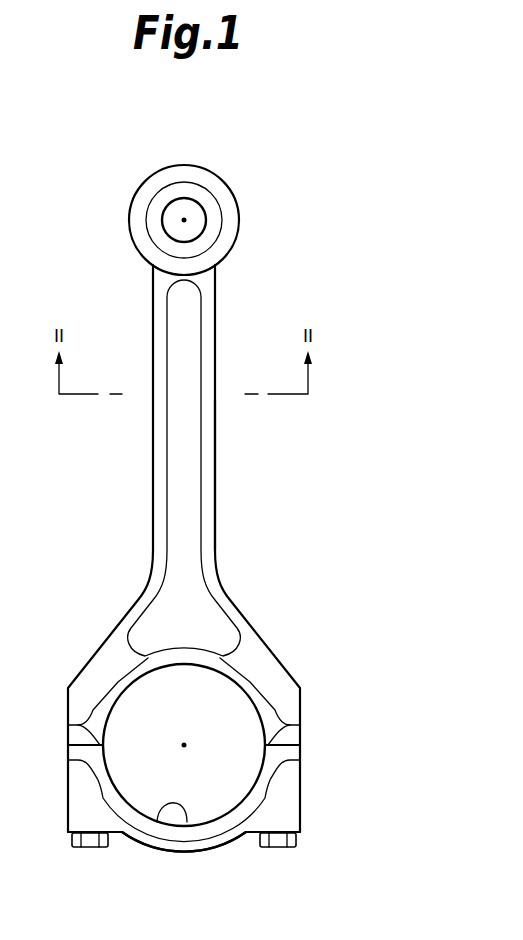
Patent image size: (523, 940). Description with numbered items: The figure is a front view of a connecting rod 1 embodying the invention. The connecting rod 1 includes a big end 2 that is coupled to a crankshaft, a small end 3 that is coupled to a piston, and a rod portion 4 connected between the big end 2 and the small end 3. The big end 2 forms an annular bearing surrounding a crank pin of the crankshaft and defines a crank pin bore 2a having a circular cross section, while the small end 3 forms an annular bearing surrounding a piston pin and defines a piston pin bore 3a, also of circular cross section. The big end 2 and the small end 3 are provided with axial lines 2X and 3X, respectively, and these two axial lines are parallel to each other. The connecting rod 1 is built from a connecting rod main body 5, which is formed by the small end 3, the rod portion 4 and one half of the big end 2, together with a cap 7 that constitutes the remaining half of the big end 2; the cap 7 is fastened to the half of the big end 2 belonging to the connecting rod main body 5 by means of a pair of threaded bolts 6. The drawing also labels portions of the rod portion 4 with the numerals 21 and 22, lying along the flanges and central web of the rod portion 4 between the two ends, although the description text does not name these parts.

The connecting rod 1 is at (355, 157).
The big end 2 is at (288, 687).
The axial line of the big end 2X is at (184, 744).
The crank pin bore 2a is at (187, 822).
The small end 3 is at (203, 177).
The piston pin bore 3a is at (168, 215).
The axial line of the small end 3X is at (183, 221).
The rod portion 4 is at (207, 477).
The connecting rod main body 5 is at (222, 528).
The threaded bolts 6 is at (88, 847).
The cap 7 is at (310, 797).
The flange portions of rod 21 is at (158, 443).
The web portion of rod 22 is at (190, 322).